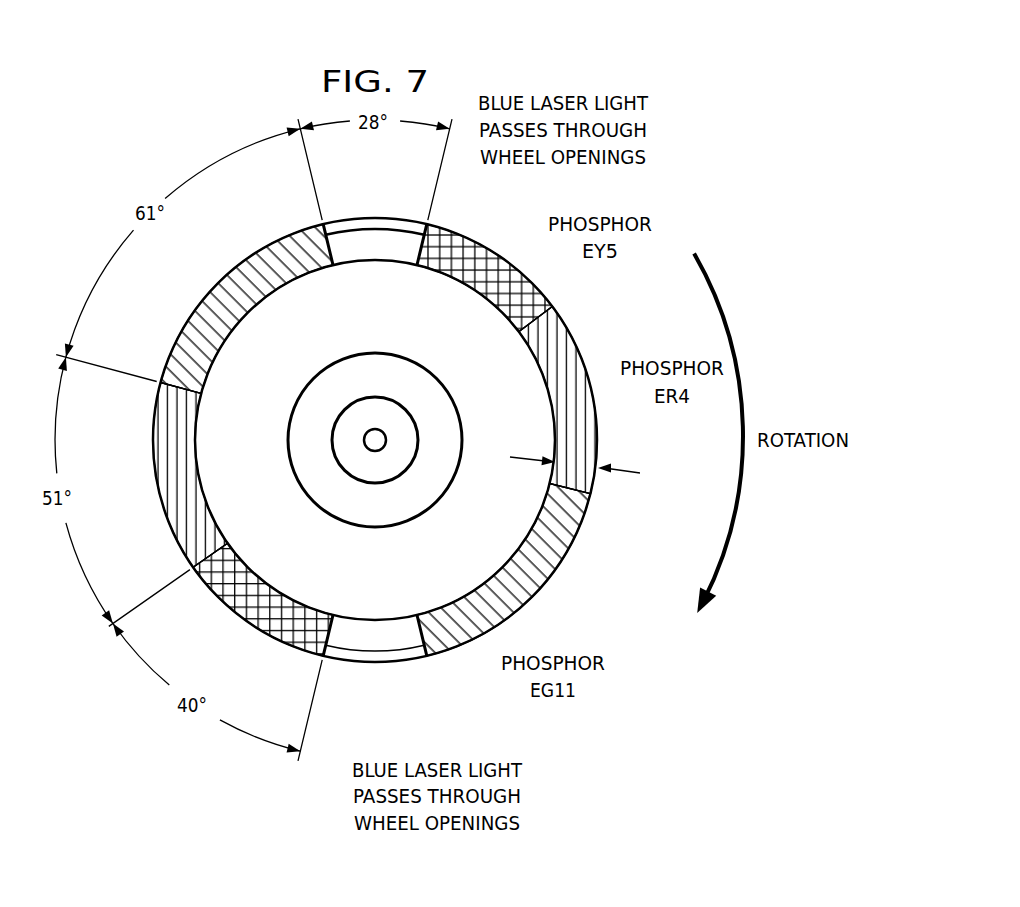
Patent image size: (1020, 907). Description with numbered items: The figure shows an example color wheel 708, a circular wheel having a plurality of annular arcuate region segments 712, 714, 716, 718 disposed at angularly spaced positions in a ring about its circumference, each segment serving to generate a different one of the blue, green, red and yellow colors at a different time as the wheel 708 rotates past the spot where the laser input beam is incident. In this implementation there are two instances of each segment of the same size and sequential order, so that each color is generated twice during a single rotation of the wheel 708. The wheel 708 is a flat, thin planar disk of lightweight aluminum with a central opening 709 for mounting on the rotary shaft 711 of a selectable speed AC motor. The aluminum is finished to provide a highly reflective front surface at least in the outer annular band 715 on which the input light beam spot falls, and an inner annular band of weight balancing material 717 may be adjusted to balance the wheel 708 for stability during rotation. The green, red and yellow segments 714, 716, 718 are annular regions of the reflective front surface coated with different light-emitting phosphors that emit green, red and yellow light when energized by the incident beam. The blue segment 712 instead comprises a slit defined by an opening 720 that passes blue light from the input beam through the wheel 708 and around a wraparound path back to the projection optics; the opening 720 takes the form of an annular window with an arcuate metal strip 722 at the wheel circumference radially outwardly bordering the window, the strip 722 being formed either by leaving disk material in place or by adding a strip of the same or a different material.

The color wheel 708 is at (728, 211).
The central opening 709 is at (342, 438).
The rotary shaft 711 is at (387, 440).
The blue segment 712 is at (359, 278).
The green segment 714 is at (215, 295).
The outer annular band 715 is at (624, 474).
The red segment 716 is at (155, 440).
The weight balancing material 717 is at (338, 521).
The yellow segment 718 is at (500, 264).
The opening 720 is at (408, 240).
The arcuate metal strip 722 is at (373, 222).